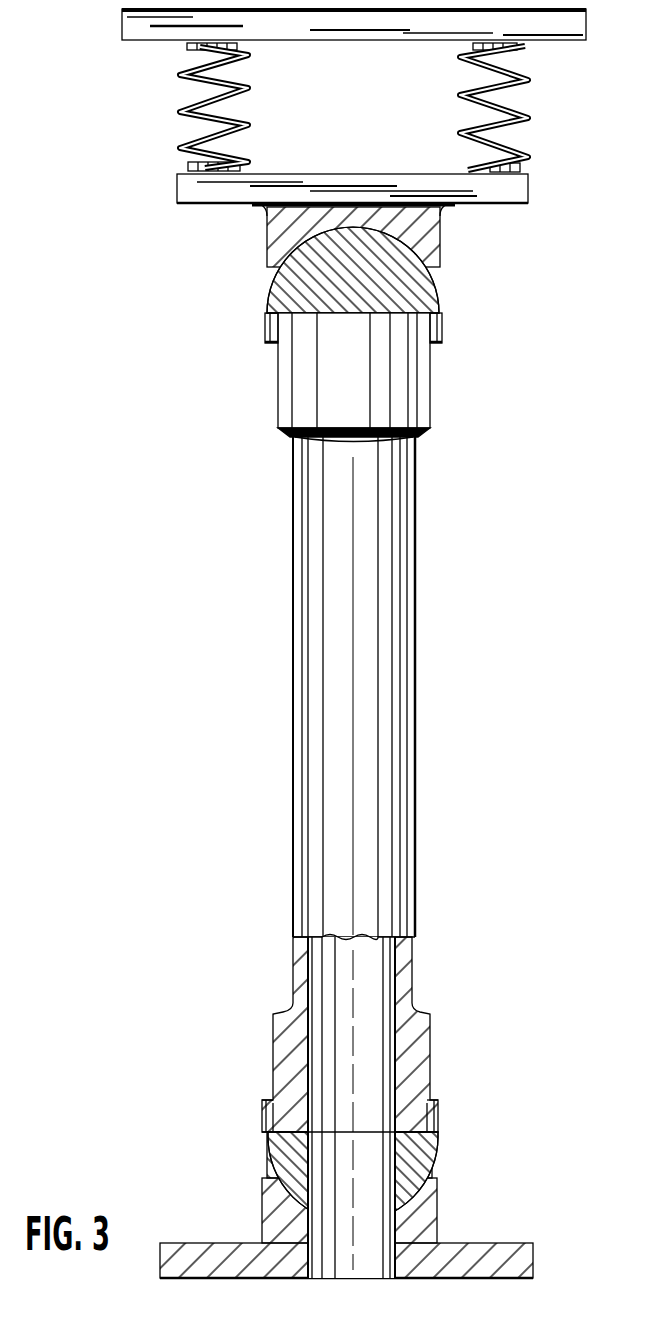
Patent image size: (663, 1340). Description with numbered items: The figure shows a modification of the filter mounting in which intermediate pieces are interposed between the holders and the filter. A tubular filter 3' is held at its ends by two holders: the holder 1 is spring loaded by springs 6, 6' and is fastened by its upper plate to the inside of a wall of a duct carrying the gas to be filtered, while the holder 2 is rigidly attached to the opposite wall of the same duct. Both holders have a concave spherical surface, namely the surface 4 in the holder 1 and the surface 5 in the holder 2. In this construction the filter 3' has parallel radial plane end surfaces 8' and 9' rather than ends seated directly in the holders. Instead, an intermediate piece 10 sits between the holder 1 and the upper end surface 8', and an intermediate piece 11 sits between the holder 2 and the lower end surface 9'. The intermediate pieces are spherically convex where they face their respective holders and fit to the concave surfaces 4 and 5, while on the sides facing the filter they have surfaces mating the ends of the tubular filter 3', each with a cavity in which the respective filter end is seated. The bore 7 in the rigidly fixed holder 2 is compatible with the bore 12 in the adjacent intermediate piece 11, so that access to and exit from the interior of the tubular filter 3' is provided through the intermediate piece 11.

The holder 1 is at (512, 186).
The holder 2 is at (513, 1260).
The filter 3' is at (376, 687).
The concave spherical surface 4 is at (405, 228).
The concave spherical surface 5 is at (412, 1205).
The spring 6 is at (190, 107).
The spring 6' is at (514, 107).
The bore 7 is at (327, 1234).
The end surface 8' is at (368, 377).
The end surface 9' is at (367, 1034).
The intermediate piece 10 is at (412, 282).
The intermediate piece 11 is at (407, 1147).
The bore 12 is at (328, 1163).